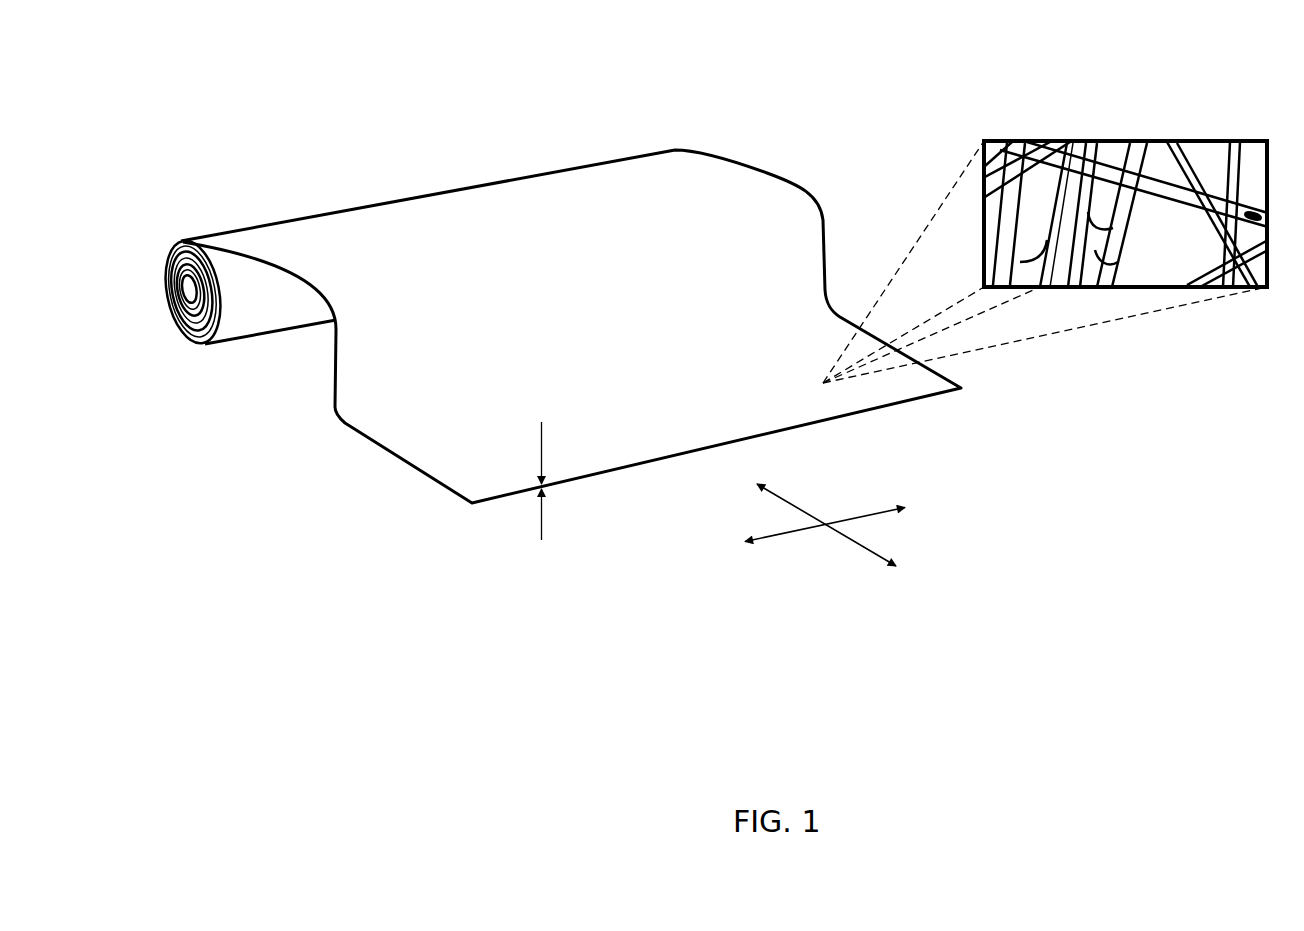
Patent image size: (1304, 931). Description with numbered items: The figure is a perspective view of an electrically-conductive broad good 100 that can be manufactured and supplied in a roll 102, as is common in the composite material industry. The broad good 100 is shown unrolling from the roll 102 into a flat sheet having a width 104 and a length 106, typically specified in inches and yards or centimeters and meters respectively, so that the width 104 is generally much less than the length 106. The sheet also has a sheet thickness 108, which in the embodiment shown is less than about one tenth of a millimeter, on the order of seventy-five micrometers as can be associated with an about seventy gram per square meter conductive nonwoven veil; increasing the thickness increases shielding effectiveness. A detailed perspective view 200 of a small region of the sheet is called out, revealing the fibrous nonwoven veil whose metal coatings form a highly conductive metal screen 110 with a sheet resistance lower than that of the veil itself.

The electrically-conductive broad good 100 is at (820, 94).
The highly conductive metal screen 110 is at (889, 119).
The roll 102 is at (178, 240).
The width 104 is at (767, 537).
The length 106 is at (787, 502).
The sheet thickness 108 is at (541, 503).
The detailed perspective view 200 is at (1140, 140).